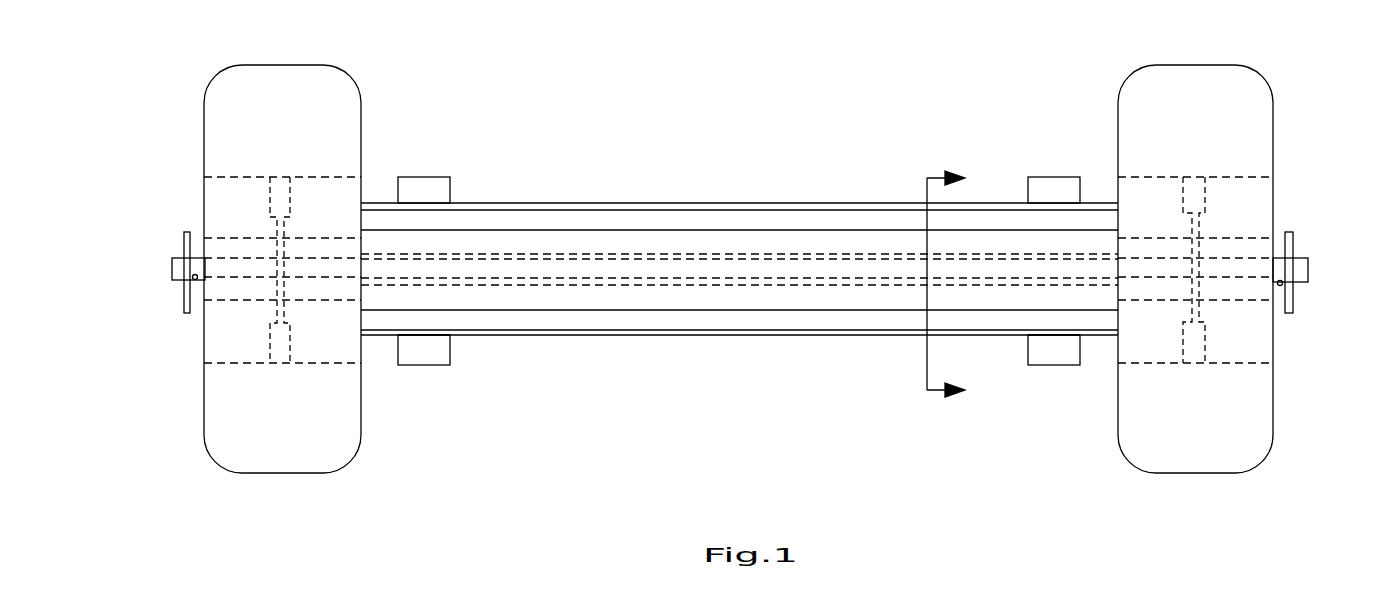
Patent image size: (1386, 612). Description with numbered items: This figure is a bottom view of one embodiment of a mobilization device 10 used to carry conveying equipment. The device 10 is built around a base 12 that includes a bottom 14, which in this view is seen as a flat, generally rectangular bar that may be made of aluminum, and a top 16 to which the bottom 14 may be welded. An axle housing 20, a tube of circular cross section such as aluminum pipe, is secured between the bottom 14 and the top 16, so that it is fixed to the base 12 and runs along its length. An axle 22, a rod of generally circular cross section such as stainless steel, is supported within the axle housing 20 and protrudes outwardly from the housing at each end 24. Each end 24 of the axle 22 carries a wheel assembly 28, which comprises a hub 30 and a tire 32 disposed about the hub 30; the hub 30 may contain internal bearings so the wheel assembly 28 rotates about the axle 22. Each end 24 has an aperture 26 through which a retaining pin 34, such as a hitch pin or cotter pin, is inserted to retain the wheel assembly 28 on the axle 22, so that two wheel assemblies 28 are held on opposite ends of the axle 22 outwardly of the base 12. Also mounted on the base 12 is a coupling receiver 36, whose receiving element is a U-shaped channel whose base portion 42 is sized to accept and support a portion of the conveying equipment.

The mobilization device 10 is at (739, 236).
The base 12 is at (738, 199).
The bottom 14 is at (785, 311).
The top 16 is at (645, 331).
The axle housing 20 is at (823, 286).
The axle 22 is at (862, 278).
The end 24 is at (176, 263).
The aperture 26 is at (193, 278).
The wheel assembly 28 is at (354, 74).
The hub 30 is at (352, 192).
The tire 32 is at (361, 420).
The retaining pin 34 is at (181, 313).
The coupling receiver 36 is at (394, 347).
The base portion 42 is at (435, 352).